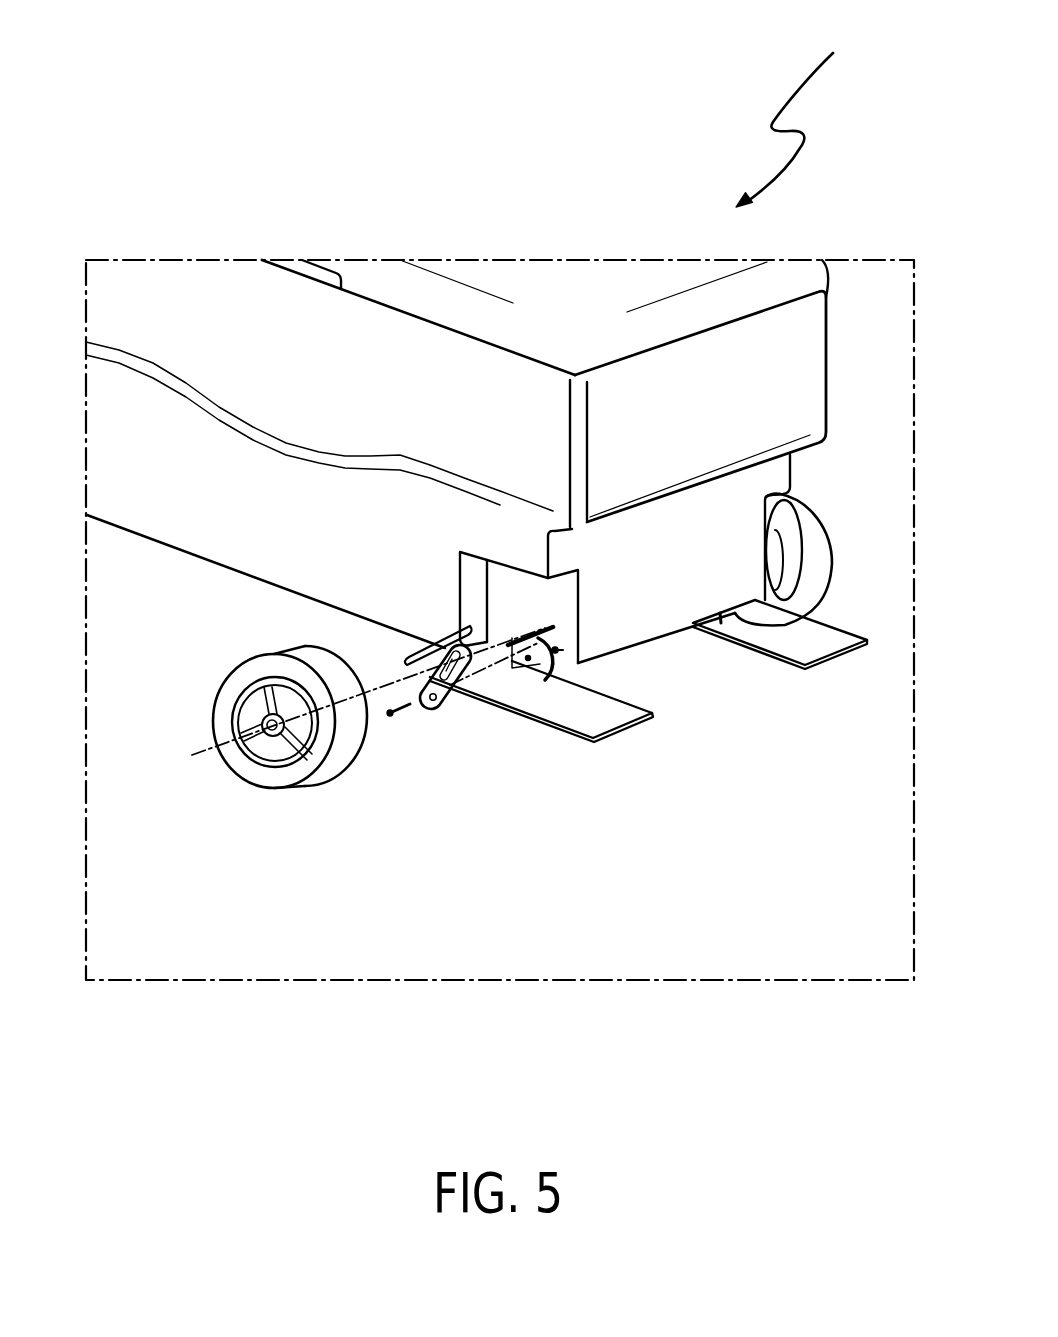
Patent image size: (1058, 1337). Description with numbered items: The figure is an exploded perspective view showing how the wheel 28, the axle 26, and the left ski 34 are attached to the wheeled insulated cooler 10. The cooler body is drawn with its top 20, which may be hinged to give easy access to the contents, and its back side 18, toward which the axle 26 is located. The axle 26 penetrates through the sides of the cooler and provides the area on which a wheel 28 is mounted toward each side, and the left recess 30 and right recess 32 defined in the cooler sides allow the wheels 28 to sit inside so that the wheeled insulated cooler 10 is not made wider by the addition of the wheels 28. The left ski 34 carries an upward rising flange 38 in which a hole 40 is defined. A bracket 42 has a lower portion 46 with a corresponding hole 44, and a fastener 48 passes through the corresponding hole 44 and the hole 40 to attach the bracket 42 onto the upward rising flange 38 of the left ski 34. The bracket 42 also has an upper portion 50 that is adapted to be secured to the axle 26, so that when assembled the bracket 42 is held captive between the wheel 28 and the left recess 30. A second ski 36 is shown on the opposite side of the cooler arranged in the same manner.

The wheeled insulated cooler 10 is at (794, 115).
The back side 18 is at (725, 395).
The top 20 is at (574, 278).
The axle 26 is at (550, 618).
The wheel 28 is at (797, 517).
The left recess 30 is at (477, 568).
The right recess 32 is at (765, 518).
The left ski 34 is at (552, 733).
The support plate 36 is at (757, 652).
The upward rising flange 38 is at (553, 668).
The hole 40 is at (528, 658).
The bracket 42 is at (455, 700).
The corresponding hole 44 is at (429, 718).
The lower portion 46 is at (440, 716).
The fastener 48 is at (388, 718).
The upper portion 50 is at (470, 633).